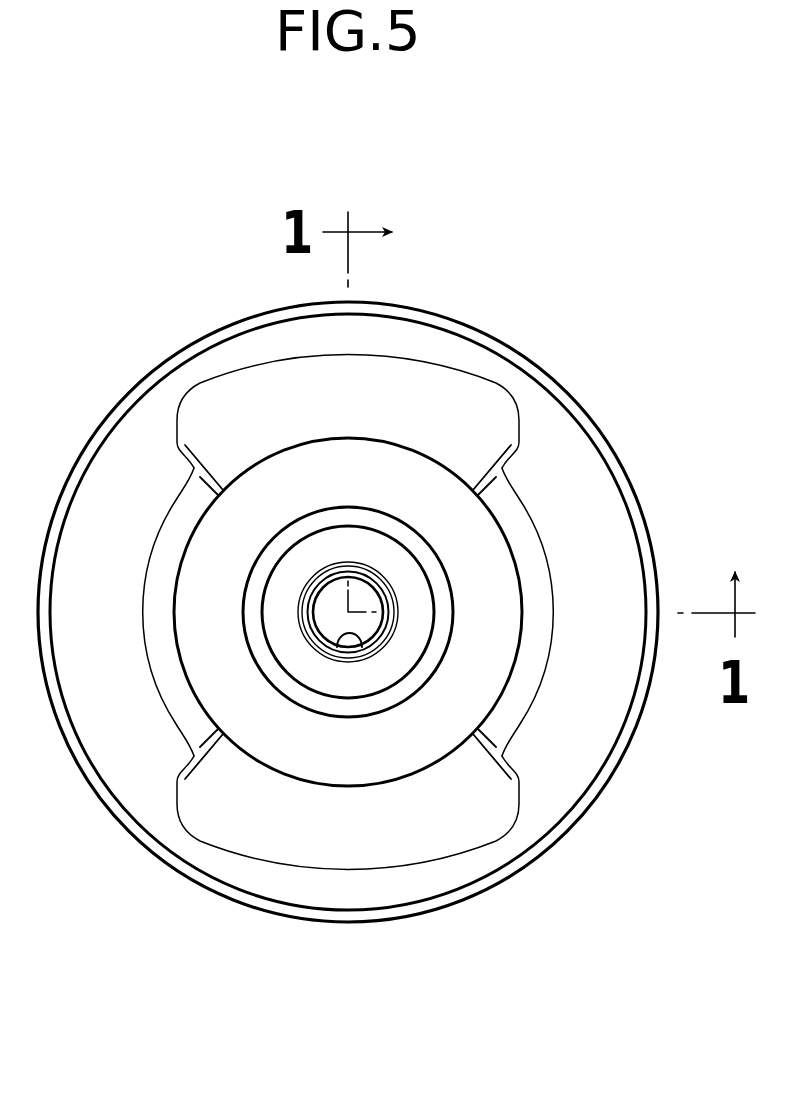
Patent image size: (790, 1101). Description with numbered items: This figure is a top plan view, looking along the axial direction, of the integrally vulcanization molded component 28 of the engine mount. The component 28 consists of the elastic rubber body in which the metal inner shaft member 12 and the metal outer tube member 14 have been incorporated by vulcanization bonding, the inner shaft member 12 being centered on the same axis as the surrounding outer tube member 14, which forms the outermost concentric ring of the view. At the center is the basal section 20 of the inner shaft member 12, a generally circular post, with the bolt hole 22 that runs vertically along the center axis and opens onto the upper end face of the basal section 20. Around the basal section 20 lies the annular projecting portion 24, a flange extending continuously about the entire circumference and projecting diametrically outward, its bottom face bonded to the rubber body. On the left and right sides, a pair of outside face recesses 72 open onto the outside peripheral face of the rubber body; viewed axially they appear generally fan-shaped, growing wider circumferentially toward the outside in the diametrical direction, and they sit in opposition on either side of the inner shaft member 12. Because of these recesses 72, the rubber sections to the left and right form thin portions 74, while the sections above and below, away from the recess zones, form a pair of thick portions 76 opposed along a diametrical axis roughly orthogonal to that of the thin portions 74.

The inner shaft member 12 is at (289, 685).
The outer tube member 14 is at (181, 356).
The basal section 20 is at (413, 607).
The bolt hole 22 is at (362, 644).
The projecting portion 24 is at (227, 550).
The integrally vulcanization molded component 28 is at (359, 612).
The outside face recesses 72 is at (140, 605).
The thin portions 74 is at (178, 693).
The thick portions 76 is at (405, 388).